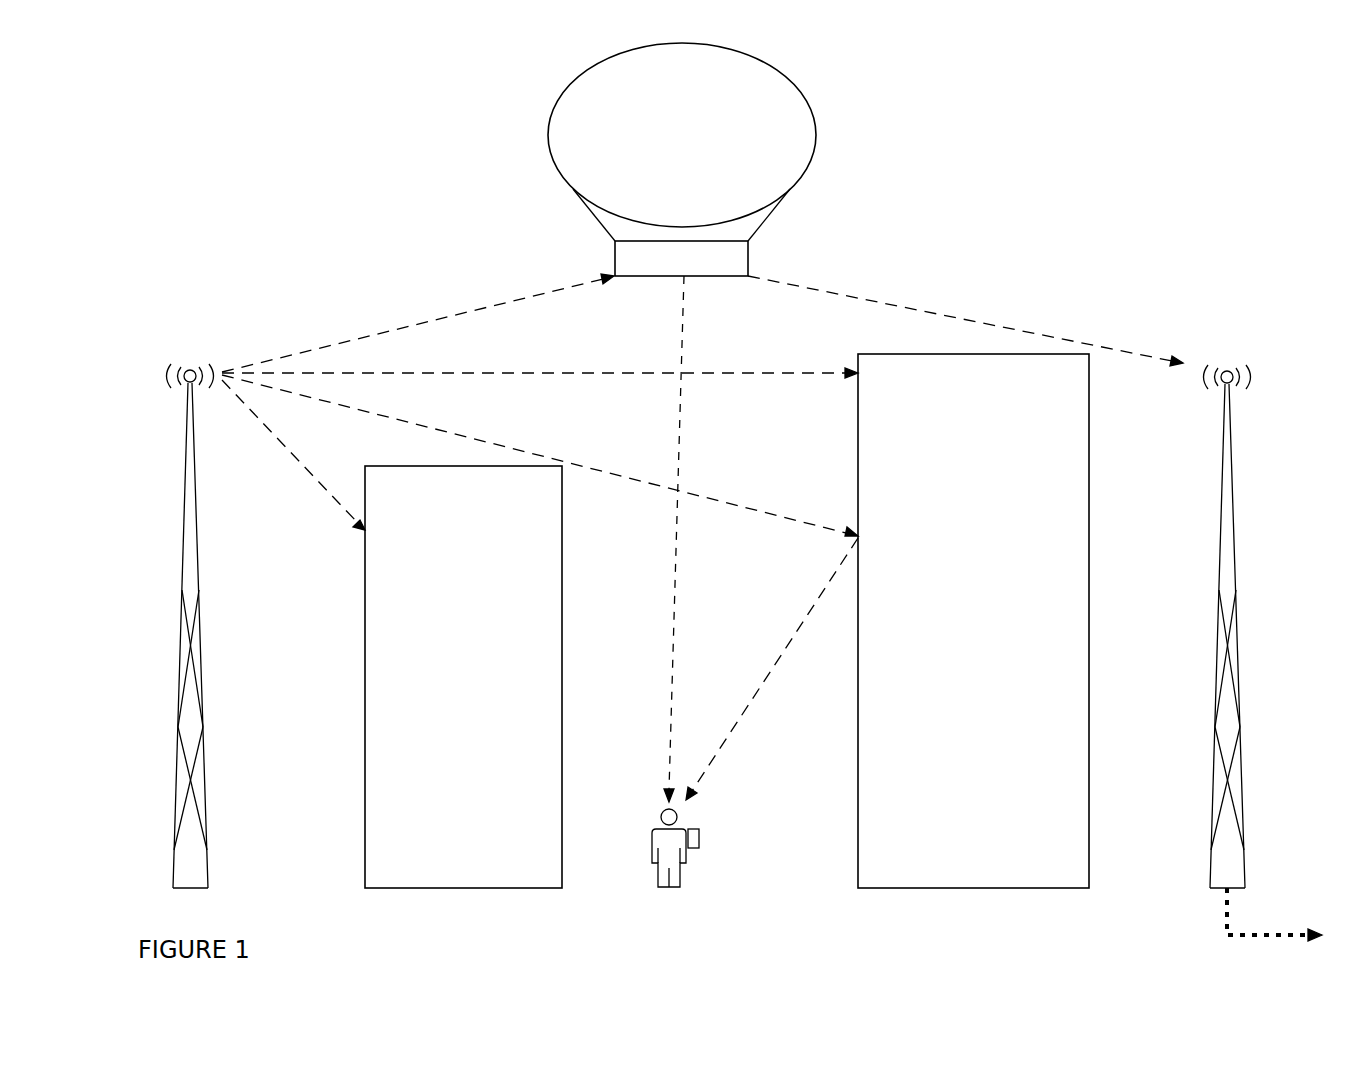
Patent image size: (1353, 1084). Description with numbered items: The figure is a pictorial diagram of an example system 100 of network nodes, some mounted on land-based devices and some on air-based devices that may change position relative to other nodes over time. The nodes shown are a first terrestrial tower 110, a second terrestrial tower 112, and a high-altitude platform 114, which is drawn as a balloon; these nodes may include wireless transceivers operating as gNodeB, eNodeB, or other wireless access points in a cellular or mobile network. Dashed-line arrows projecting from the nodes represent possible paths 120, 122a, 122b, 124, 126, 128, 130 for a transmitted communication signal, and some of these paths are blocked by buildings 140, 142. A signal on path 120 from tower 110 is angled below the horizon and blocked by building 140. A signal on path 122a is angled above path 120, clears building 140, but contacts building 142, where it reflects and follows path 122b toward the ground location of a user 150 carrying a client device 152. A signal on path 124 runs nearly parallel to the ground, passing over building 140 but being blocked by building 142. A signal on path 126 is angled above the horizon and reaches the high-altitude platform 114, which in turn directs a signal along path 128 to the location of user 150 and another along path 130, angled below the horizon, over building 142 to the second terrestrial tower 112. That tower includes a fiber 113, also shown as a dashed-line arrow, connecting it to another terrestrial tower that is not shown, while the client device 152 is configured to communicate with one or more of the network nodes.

The system 100 is at (215, 926).
The first terrestrial tower 110 is at (190, 593).
The second terrestrial tower 112 is at (1227, 592).
The fiber 113 is at (1274, 926).
The high-altitude platform 114 is at (698, 137).
The path 120 is at (293, 455).
The path 122a is at (540, 455).
The path 122b is at (772, 669).
The path 124 is at (540, 362).
The path 126 is at (418, 323).
The path 128 is at (660, 539).
The path 130 is at (965, 321).
The building 140 is at (481, 694).
The building 142 is at (983, 626).
The user 150 is at (680, 864).
The client device 152 is at (713, 838).